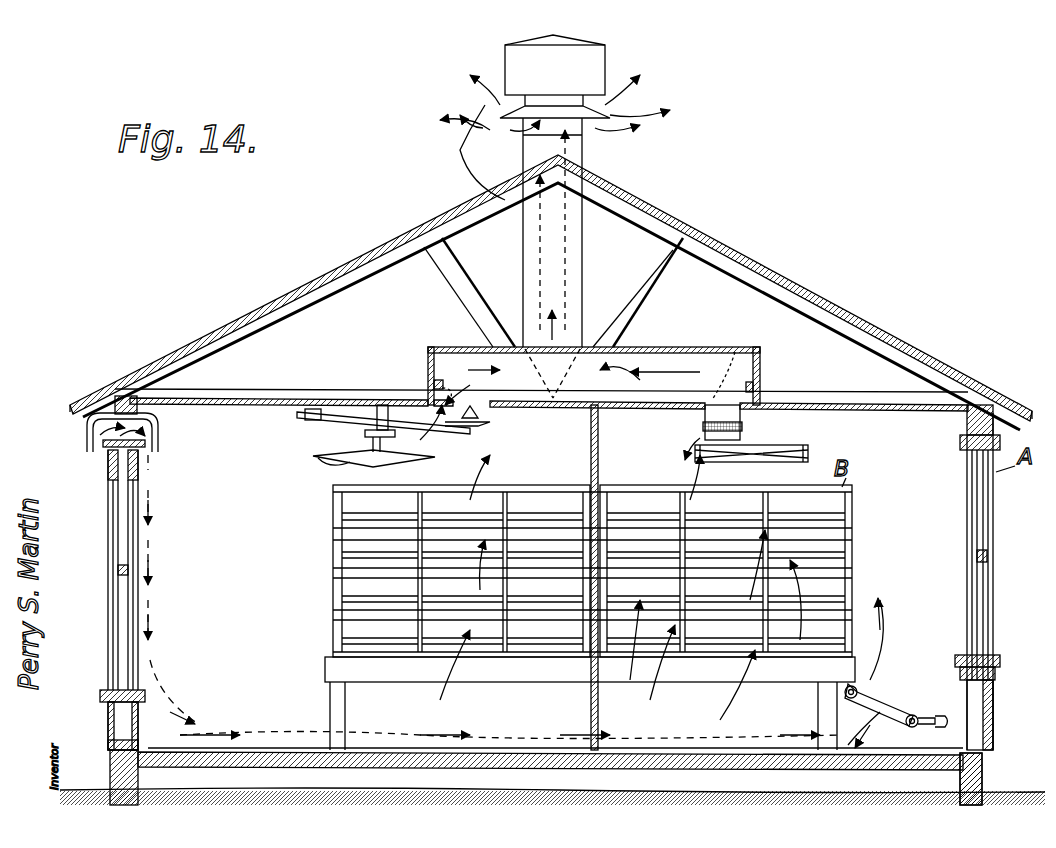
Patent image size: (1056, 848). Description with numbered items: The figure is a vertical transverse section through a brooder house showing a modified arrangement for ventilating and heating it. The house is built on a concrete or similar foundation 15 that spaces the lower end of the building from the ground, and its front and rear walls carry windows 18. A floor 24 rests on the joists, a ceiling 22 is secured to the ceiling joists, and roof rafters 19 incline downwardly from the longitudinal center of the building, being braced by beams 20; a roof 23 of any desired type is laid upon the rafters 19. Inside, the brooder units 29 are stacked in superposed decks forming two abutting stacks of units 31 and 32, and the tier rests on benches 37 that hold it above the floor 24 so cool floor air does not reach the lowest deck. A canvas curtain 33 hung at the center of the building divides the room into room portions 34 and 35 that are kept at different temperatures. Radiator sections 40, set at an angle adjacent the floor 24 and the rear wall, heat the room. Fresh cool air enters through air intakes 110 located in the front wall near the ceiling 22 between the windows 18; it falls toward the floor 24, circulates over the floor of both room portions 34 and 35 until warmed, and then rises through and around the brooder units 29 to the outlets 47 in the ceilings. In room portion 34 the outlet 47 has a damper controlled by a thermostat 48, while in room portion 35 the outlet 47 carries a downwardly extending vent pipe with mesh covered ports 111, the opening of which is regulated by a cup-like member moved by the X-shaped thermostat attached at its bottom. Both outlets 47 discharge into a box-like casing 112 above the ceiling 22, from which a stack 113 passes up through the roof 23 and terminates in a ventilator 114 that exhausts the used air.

The foundation 15 is at (982, 785).
The windows 18 is at (116, 545).
The roof rafters 19 is at (322, 300).
The beams 20 is at (462, 286).
The ceiling 22 is at (290, 398).
The roof 23 is at (292, 295).
The floor 24 is at (256, 750).
The brooder units 29 is at (340, 502).
The stack of brooder units 31 is at (340, 563).
The stack of brooder units 32 is at (848, 556).
The curtain 33 is at (600, 465).
The room portion 34 is at (188, 590).
The room portion 35 is at (899, 577).
The benches 37 is at (340, 666).
The radiator sections 40 is at (890, 708).
The outlets 47 is at (434, 382).
The thermostat 48 is at (352, 462).
The air intakes 110 is at (87, 428).
The mesh covered ports 111 is at (742, 428).
The box-like casing 112 is at (662, 346).
The stack 113 is at (584, 247).
The ventilator 114 is at (610, 94).